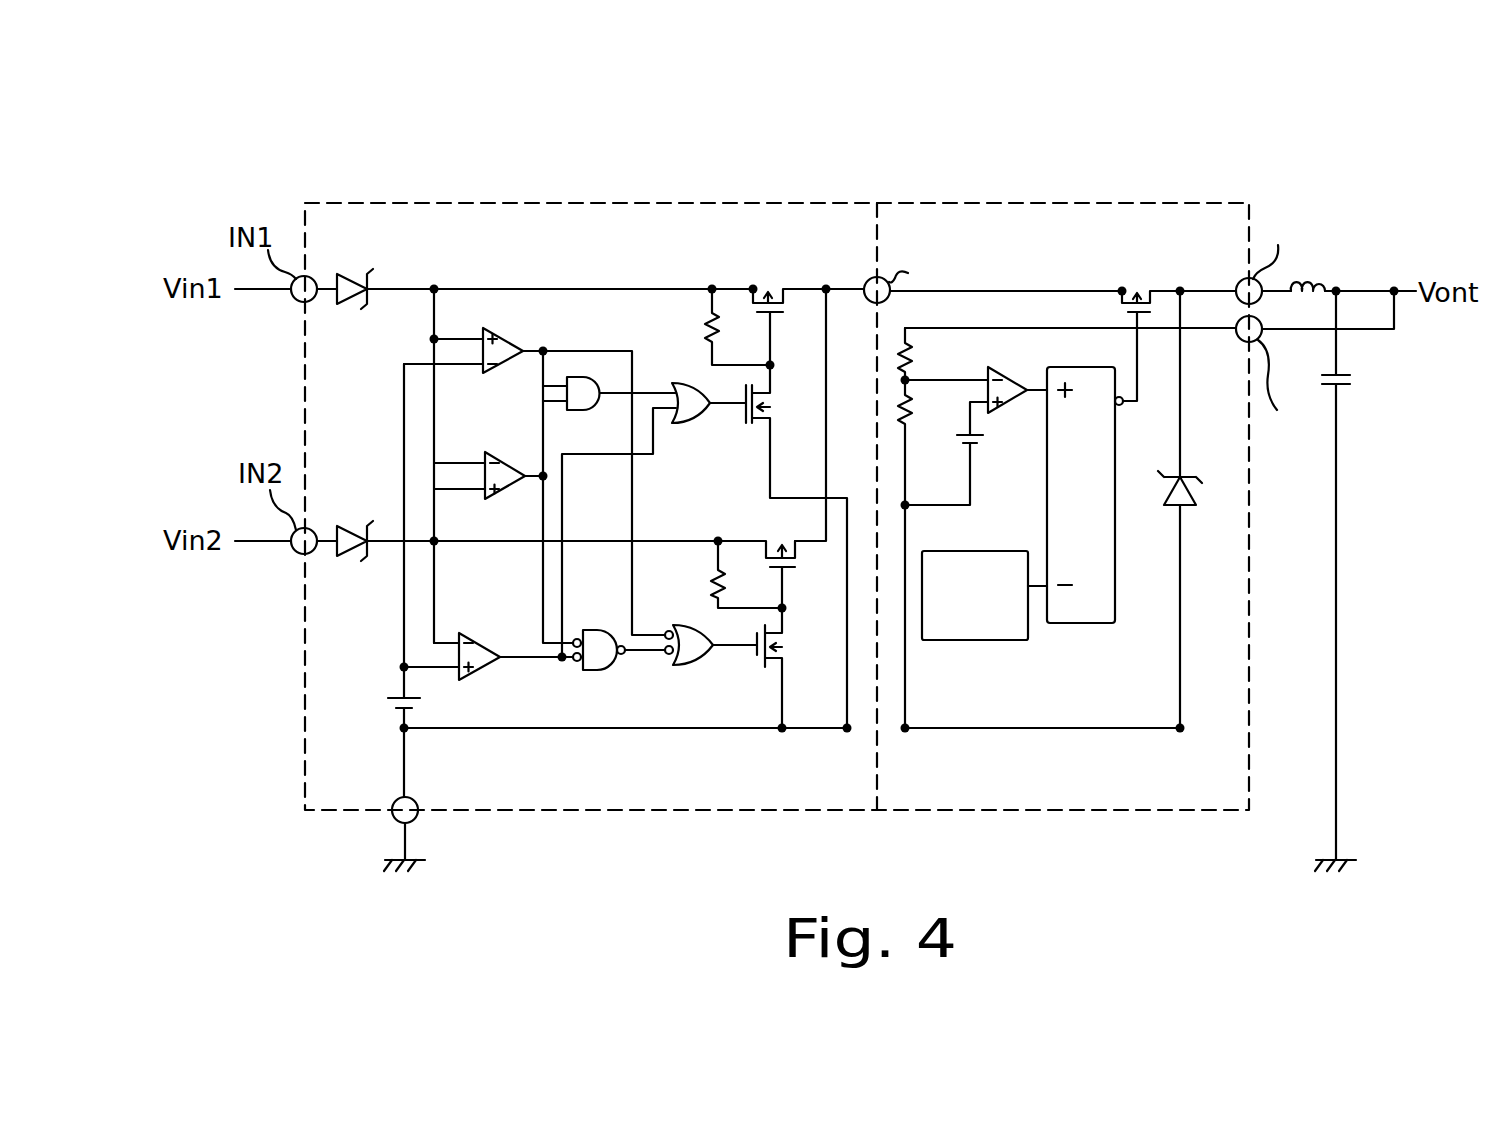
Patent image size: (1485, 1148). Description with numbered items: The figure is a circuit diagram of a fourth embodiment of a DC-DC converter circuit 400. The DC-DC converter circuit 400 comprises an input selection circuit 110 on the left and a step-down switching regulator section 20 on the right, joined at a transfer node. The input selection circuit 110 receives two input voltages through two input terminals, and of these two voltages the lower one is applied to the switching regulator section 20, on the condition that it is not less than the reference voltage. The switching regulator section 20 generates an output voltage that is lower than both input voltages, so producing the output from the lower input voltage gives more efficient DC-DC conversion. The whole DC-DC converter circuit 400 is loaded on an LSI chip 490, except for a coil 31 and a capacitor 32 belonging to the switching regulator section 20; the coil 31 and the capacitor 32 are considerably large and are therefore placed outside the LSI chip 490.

The DC-DC converter circuit 400 is at (1210, 151).
The switching regulator section 20 is at (1266, 193).
The input selection circuit 110 is at (713, 225).
The LSI chip 490 is at (978, 203).
The coil 31 is at (1317, 277).
The capacitor 32 is at (1359, 382).